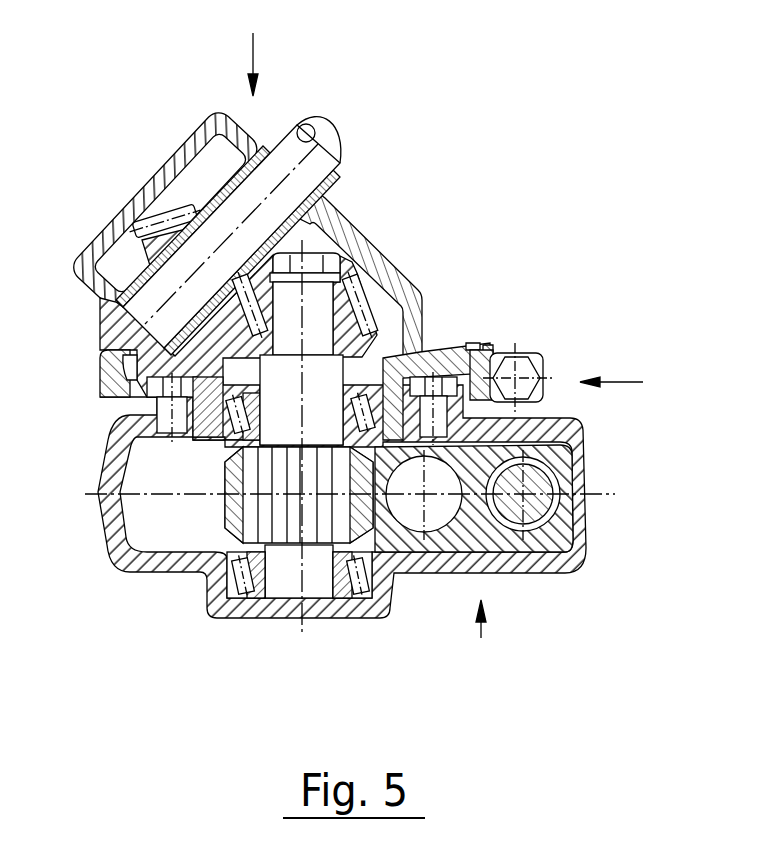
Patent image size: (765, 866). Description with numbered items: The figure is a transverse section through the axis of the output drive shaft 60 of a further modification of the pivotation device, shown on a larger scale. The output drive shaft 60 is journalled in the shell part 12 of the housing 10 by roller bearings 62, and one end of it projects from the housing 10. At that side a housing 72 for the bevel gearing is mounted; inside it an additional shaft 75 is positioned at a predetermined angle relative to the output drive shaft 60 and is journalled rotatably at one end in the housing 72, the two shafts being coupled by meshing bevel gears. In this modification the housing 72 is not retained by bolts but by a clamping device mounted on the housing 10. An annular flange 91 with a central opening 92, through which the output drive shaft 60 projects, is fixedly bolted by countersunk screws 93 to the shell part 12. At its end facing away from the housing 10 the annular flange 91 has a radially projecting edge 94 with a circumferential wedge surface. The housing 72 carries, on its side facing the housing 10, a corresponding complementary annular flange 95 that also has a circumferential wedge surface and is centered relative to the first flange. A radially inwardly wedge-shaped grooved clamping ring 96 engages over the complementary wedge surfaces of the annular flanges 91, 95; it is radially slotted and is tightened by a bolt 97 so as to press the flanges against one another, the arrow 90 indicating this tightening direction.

The housing 10 is at (479, 642).
The shell part 12 is at (583, 460).
The output drive shaft 60 is at (317, 323).
The roller bearings 62 is at (240, 603).
The housing 72 is at (255, 50).
The additional shaft 75 is at (310, 125).
The adjustment direction arrow 90 is at (630, 382).
The annular flange 91 is at (217, 420).
The central opening 92 is at (428, 377).
The countersunk screws 93 is at (472, 358).
The radially projecting edge 94 is at (478, 400).
The annular flange 95 is at (130, 350).
The clamping ring 96 is at (110, 371).
The bolt 97 is at (527, 370).